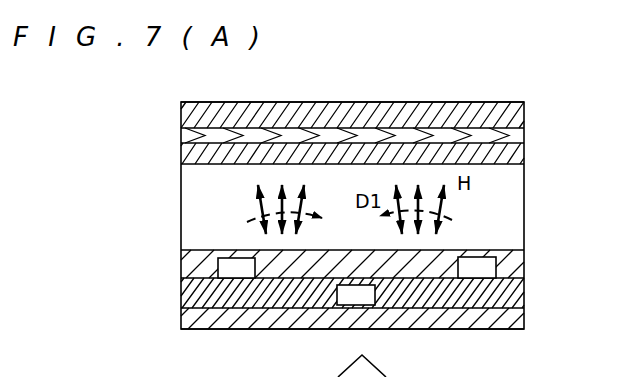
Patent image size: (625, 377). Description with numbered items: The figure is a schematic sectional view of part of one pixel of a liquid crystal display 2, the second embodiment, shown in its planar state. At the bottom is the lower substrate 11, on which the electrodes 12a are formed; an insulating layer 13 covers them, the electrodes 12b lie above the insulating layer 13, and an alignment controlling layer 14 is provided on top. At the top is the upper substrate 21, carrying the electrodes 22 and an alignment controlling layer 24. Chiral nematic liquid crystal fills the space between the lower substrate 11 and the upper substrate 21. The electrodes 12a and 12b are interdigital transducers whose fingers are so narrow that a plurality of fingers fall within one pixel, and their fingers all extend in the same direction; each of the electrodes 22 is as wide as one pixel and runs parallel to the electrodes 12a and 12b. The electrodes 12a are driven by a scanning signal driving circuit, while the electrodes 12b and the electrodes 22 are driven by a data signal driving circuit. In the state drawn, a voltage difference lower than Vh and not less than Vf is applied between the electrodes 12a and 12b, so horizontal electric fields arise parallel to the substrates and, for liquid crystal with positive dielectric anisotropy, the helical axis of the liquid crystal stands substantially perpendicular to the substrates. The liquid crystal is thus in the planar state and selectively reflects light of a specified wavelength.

The liquid crystal display 2 is at (477, 40).
The upper substrate 21 is at (515, 110).
The electrodes 22 is at (515, 134).
The alignment controlling layer 24 is at (511, 146).
The alignment controlling layer 14 is at (512, 262).
The insulating layer 13 is at (518, 296).
The lower substrate 11 is at (517, 318).
The electrodes 12a is at (342, 306).
The electrodes 12b is at (224, 276).